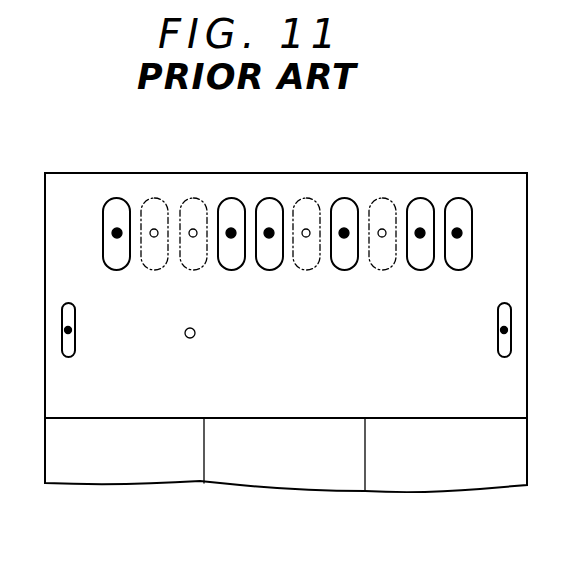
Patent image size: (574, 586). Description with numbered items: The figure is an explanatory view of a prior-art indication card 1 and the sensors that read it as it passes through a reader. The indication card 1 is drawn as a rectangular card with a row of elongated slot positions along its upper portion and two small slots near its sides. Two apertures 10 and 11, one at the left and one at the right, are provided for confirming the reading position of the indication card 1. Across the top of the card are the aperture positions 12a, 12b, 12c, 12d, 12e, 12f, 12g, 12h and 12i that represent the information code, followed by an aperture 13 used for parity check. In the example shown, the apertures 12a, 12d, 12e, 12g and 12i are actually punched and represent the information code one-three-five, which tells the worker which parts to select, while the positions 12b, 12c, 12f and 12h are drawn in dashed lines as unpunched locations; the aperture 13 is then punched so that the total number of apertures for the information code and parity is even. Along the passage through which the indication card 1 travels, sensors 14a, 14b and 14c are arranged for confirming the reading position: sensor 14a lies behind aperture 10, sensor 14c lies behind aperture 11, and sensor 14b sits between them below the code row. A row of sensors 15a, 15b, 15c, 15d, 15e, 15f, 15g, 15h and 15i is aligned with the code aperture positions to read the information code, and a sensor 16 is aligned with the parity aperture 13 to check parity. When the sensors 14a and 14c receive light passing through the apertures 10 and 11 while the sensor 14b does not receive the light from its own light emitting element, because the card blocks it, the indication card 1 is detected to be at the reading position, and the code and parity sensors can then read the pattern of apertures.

The indication card 1 is at (527, 400).
The aperture 10 is at (68, 357).
The aperture 11 is at (511, 345).
The aperture 12a is at (110, 198).
The aperture position 12b is at (150, 198).
The aperture position 12c is at (189, 198).
The aperture 12d is at (229, 198).
The aperture 12e is at (267, 198).
The aperture position 12f is at (304, 198).
The aperture 12g is at (343, 198).
The aperture position 12h is at (381, 198).
The aperture 12i is at (419, 198).
The aperture for parity check 13 is at (457, 198).
The sensor 14a is at (75, 338).
The sensor 14b is at (195, 337).
The sensor 14c is at (499, 330).
The sensor 15a is at (117, 233).
The sensor 15b is at (154, 238).
The sensor 15c is at (193, 238).
The sensor 15d is at (231, 238).
The sensor 15e is at (269, 238).
The sensor 15f is at (306, 238).
The sensor 15g is at (344, 238).
The sensor 15h is at (382, 238).
The sensor 15i is at (420, 238).
The sensor 16 is at (457, 233).